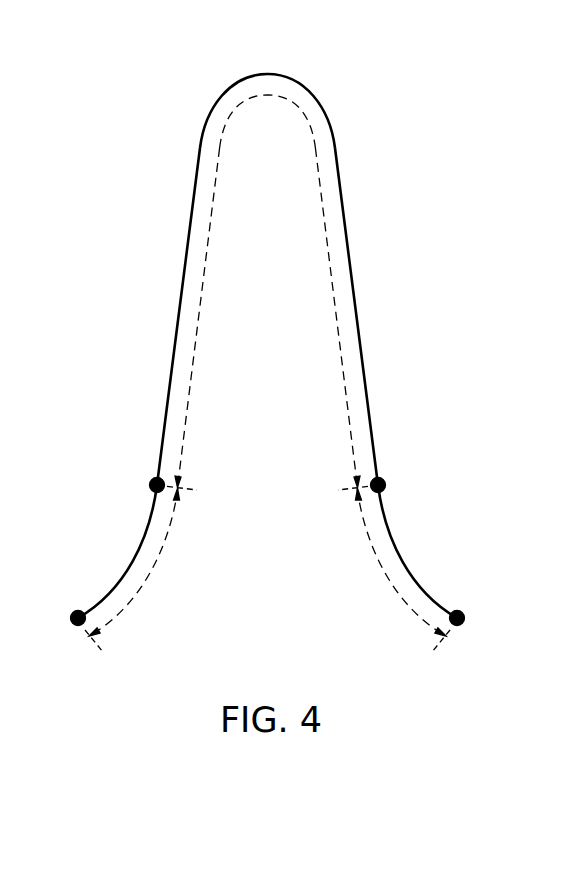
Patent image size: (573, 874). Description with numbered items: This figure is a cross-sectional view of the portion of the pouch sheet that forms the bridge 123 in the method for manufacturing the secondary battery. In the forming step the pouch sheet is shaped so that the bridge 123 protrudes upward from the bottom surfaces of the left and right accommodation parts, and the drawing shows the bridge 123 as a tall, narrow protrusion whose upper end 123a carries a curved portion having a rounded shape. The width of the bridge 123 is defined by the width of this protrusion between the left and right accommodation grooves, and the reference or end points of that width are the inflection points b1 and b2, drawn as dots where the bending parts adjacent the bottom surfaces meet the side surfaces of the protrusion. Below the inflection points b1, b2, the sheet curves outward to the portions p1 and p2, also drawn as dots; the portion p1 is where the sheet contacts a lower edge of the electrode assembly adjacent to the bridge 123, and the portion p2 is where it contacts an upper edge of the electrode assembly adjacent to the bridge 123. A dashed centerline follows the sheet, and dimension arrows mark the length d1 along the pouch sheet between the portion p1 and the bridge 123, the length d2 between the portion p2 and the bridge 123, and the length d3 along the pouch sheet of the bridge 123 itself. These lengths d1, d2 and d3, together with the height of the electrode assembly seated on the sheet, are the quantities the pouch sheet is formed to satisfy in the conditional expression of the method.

The bridge 123 is at (269, 312).
The upper end of the bridge 123a is at (290, 77).
The inflection point b1 is at (150, 484).
The inflection point b2 is at (385, 484).
The portion contacting a lower edge of the electrode assembly p1 is at (77, 611).
The portion contacting an upper edge of the electrode assembly p2 is at (458, 611).
The length between portion p1 and the bridge d1 is at (141, 564).
The length between portion p2 and the bridge d2 is at (394, 564).
The length of the bridge along the pouch sheet d3 is at (268, 291).